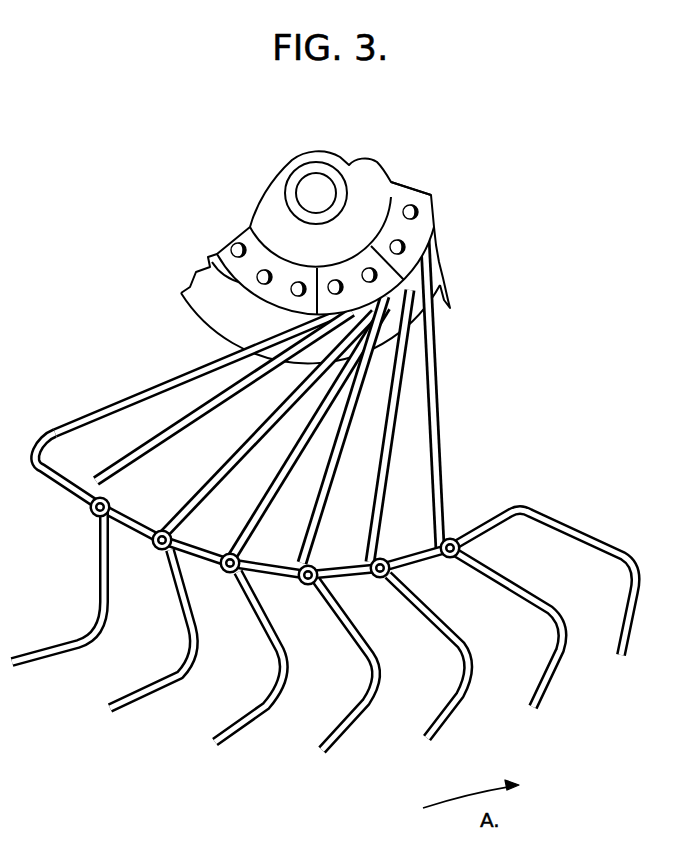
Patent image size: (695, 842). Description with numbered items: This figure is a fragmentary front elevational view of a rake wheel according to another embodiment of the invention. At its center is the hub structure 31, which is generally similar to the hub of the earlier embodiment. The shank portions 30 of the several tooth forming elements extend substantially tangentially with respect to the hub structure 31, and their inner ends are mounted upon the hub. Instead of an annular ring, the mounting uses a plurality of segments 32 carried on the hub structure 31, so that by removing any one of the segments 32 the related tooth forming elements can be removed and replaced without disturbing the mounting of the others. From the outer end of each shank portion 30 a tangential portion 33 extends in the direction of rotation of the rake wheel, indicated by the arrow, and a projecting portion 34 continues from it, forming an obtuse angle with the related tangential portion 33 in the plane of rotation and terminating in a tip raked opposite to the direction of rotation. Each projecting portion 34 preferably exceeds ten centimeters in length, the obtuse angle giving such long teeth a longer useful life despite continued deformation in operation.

The shank portion 30 is at (126, 401).
The hub structure 31 is at (256, 215).
The segment 32 is at (211, 255).
The tangential portion 33 is at (60, 475).
The projecting portion 34 is at (183, 632).